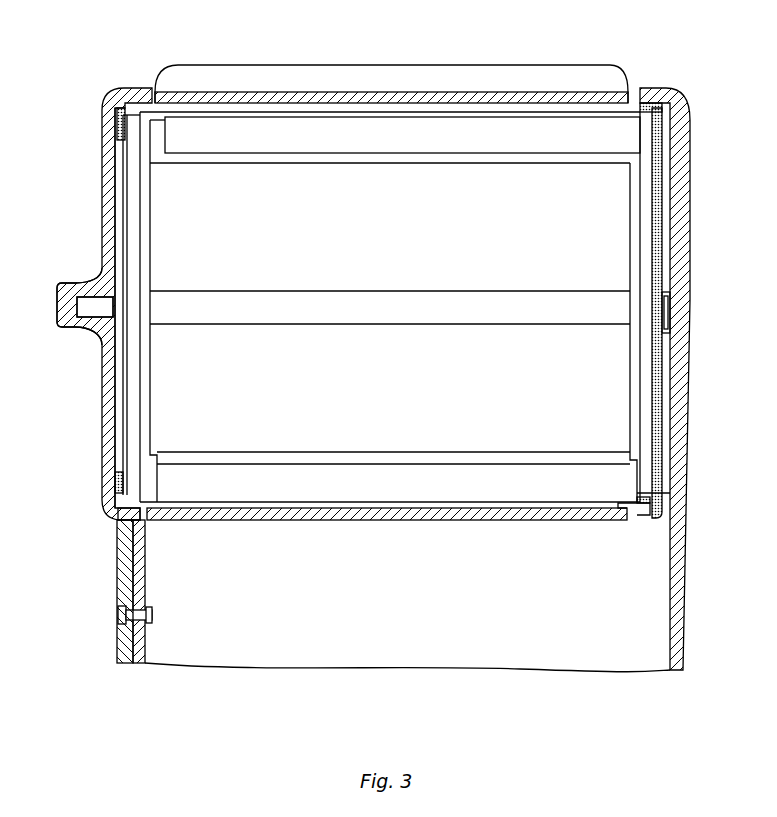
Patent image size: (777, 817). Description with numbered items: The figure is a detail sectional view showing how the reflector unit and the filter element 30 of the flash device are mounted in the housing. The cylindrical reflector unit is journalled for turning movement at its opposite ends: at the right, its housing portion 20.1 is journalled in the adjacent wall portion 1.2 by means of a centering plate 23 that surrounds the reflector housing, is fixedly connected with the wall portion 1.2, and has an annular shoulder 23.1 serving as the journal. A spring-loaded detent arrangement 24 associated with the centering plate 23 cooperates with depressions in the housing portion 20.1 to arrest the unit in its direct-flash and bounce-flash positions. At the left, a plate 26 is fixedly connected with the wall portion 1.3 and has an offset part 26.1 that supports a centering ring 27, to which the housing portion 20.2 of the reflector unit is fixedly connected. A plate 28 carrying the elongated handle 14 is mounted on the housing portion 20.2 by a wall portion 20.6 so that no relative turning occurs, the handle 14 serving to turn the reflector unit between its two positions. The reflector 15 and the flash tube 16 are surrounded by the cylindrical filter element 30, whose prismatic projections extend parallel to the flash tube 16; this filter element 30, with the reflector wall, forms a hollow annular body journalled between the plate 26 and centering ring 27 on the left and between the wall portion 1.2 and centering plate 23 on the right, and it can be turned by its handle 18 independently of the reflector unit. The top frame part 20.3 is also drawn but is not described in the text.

The wall portion 1.2 is at (680, 172).
The wall portion 1.3 is at (120, 653).
The elongated handle 14 is at (62, 290).
The reflector 15 is at (612, 434).
The flash tube 16 is at (475, 305).
The handle 18 is at (415, 92).
The housing portion 20.1 is at (645, 248).
The housing portion 20.2 is at (135, 168).
The frame top part 20.3 is at (283, 128).
The wall portion 20.6 is at (92, 305).
The centering plate 23 is at (665, 403).
The annular shoulder 23.1 is at (648, 103).
The spring-loaded detent arrangement 24 is at (666, 313).
The plate 26 is at (145, 568).
The offset part 26.1 is at (118, 512).
The centering ring 27 is at (116, 480).
The plate 28 is at (110, 205).
The filter element 30 is at (512, 516).